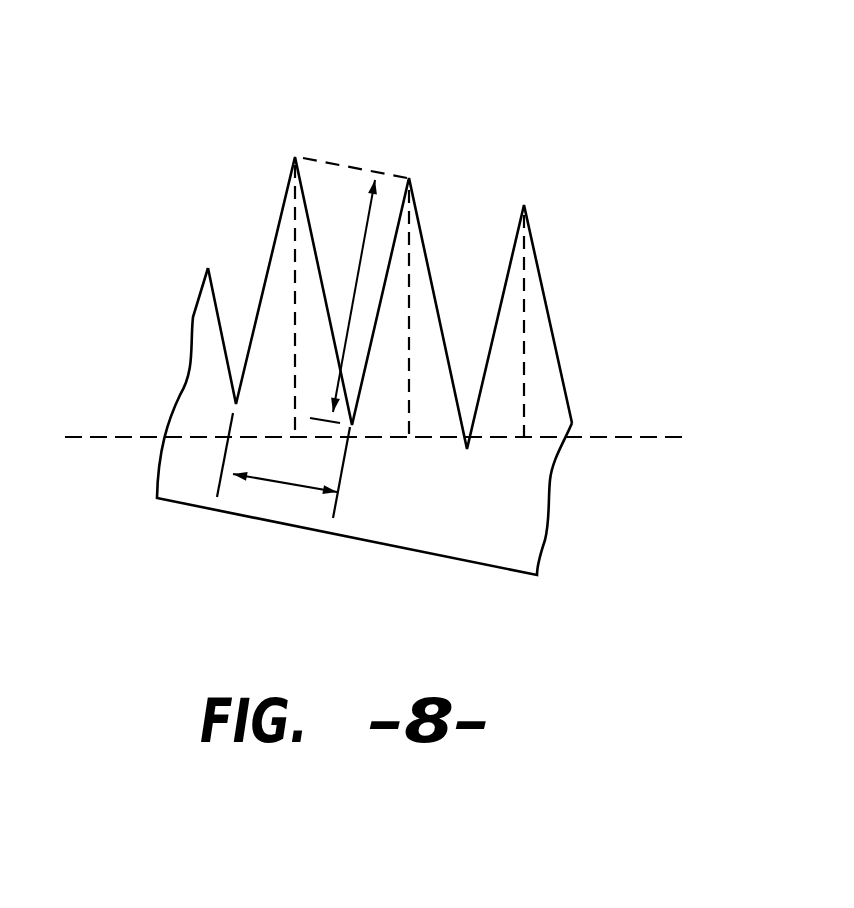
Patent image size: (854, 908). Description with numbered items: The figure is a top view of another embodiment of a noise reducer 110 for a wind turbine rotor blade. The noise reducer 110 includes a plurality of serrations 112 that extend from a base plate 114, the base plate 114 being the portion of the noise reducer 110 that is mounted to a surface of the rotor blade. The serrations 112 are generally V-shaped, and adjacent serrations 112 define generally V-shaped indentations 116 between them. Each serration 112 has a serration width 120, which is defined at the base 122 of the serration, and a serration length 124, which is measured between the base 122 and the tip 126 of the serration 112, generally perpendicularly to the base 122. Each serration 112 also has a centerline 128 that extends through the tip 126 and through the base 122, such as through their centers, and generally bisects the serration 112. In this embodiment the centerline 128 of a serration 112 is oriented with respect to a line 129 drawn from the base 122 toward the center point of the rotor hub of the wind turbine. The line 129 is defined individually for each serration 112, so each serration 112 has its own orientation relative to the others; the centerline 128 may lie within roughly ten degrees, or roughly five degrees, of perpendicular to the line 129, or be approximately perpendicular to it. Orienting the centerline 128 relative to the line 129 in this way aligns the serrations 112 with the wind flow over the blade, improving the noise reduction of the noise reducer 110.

The noise reducer 110 is at (385, 317).
The serrations 112 is at (265, 272).
The base plate 114 is at (185, 490).
The indentations 116 is at (338, 190).
The serration width 120 is at (270, 480).
The base 122 is at (268, 392).
The serration length 124 is at (372, 222).
The tip 126 is at (293, 153).
The centerline 128 is at (410, 350).
The line 129 is at (622, 438).